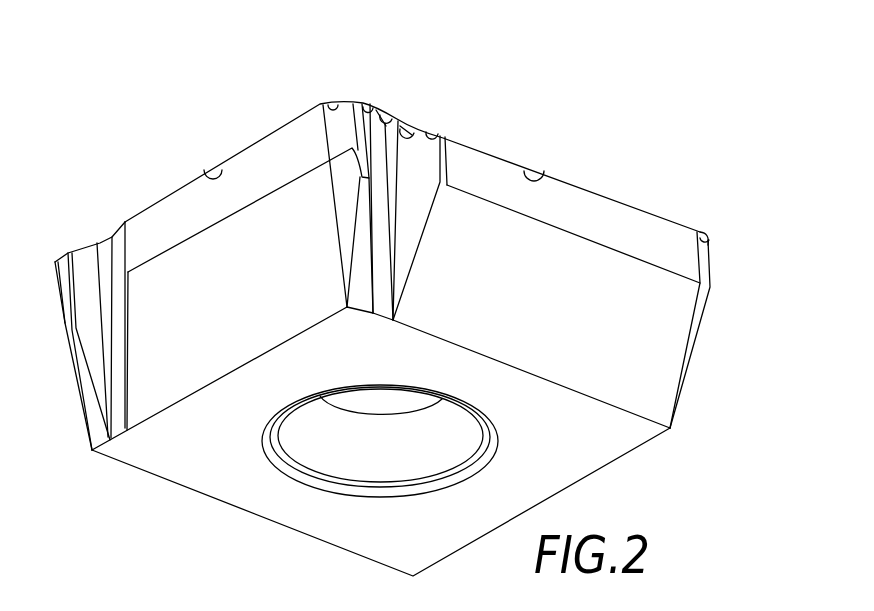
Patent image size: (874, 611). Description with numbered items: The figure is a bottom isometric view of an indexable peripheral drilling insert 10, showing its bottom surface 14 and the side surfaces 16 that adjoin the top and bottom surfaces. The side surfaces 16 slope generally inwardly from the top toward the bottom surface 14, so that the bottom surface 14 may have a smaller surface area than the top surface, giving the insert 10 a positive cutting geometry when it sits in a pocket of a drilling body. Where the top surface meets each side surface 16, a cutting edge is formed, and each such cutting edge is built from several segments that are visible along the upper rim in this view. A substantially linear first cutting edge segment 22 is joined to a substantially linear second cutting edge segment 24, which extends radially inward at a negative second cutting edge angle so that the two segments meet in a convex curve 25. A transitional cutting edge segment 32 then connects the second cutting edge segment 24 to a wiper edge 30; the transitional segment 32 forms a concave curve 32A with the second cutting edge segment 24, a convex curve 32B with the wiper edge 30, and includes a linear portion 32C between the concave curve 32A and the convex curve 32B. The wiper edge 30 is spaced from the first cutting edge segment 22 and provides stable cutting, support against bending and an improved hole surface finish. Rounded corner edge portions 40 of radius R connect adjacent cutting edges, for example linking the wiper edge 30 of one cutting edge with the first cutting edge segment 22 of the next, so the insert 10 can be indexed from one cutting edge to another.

The drilling insert 10 is at (104, 139).
The bottom surface 14 is at (595, 460).
The side surface 16 is at (181, 350).
The first cutting edge segment 22 is at (223, 173).
The second cutting edge segment 24 is at (440, 135).
The convex curve 25 is at (455, 143).
The wiper edge 30 is at (373, 107).
The transitional cutting edge segment 32 is at (382, 133).
The concave curve 32A is at (410, 131).
The convex curve 32B is at (391, 127).
The linear portion 32C is at (404, 129).
The corner edge portion 40 is at (336, 106).